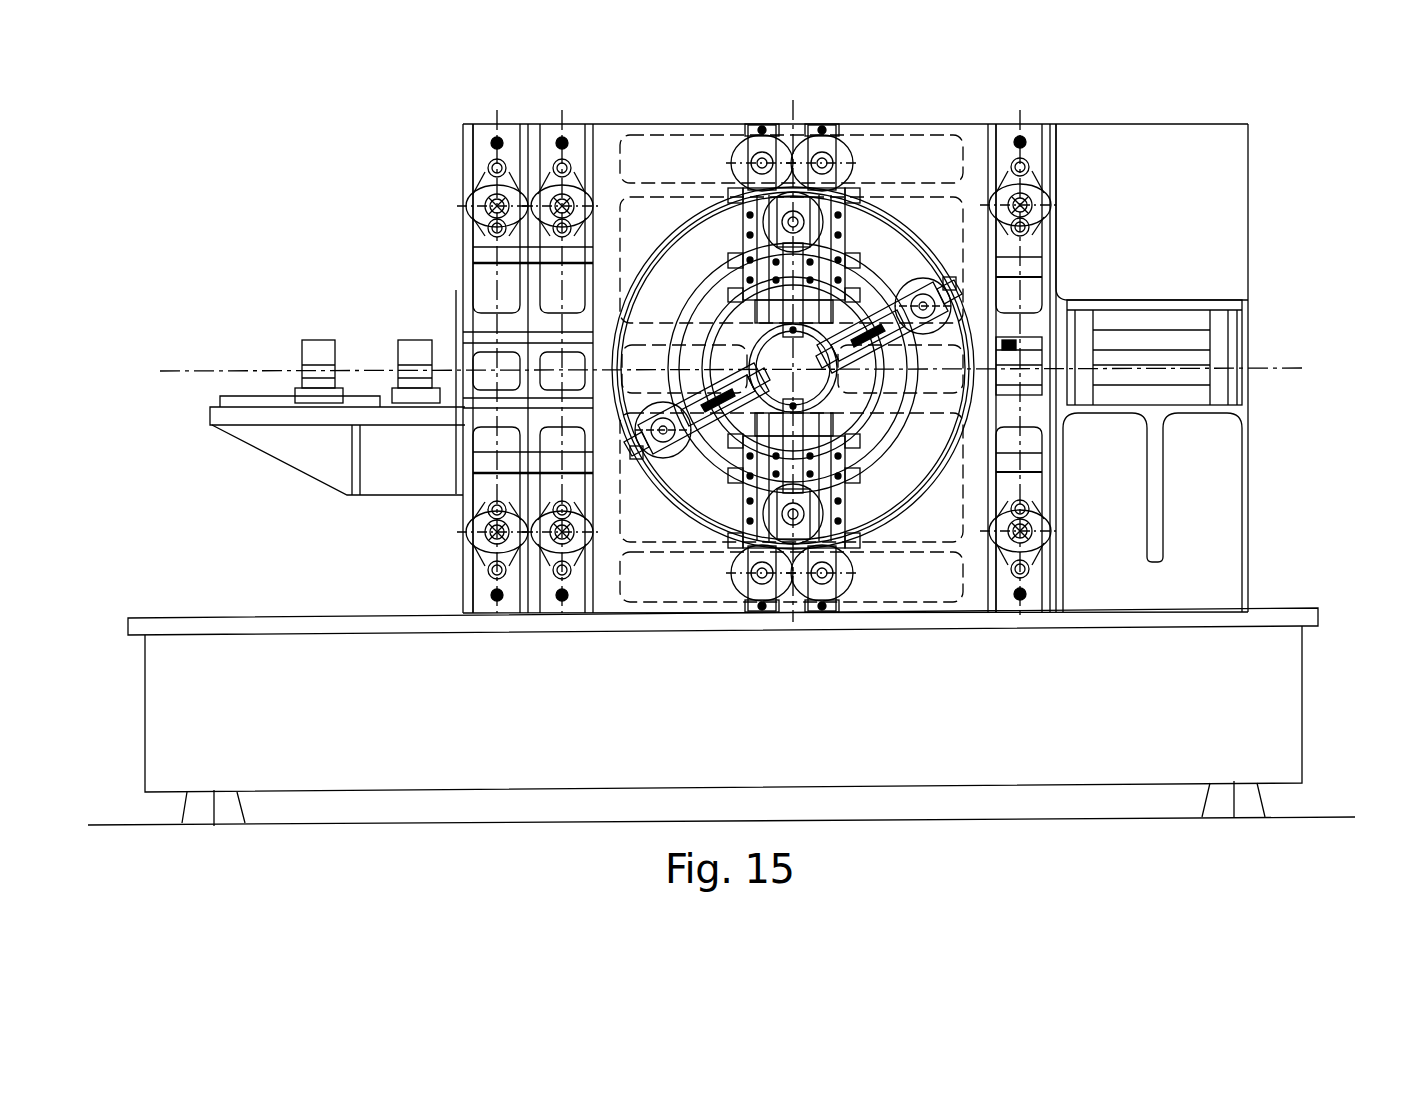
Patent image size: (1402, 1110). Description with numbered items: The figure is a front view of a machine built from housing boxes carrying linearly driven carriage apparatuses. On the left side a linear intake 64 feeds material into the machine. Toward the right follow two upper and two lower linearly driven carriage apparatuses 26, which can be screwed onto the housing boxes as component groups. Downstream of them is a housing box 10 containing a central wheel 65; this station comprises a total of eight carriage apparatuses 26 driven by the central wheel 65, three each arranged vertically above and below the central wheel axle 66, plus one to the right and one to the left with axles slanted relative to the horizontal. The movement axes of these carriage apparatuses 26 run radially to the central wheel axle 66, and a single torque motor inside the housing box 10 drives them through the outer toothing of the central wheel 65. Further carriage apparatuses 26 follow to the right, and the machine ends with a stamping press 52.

The housing box 10 is at (610, 592).
The carriage apparatus 26 is at (552, 233).
The stamping press 52 is at (1222, 267).
The linear intake 64 is at (313, 446).
The central wheel 65 is at (905, 430).
The central wheel axle 66 is at (825, 355).